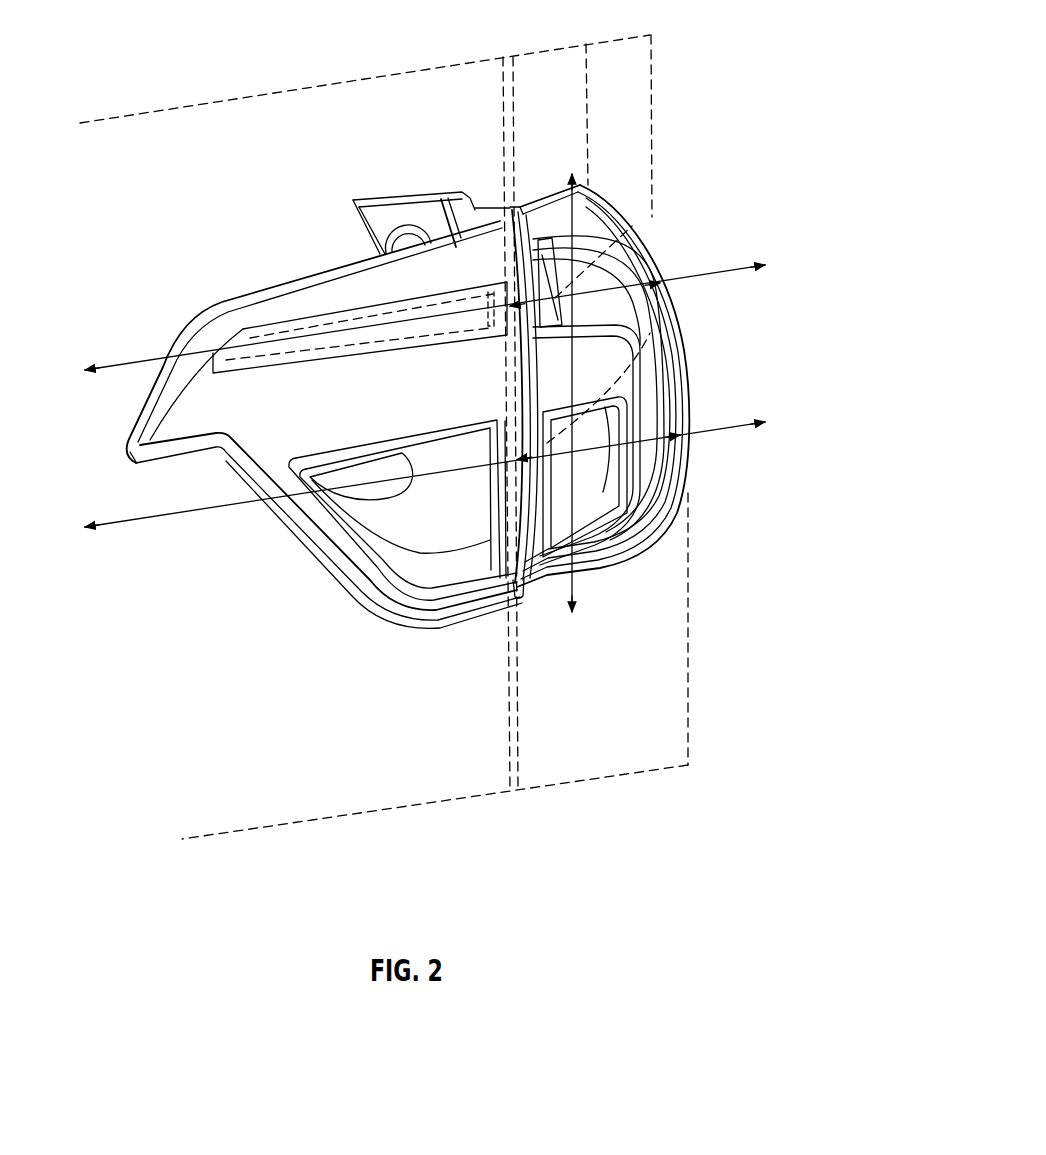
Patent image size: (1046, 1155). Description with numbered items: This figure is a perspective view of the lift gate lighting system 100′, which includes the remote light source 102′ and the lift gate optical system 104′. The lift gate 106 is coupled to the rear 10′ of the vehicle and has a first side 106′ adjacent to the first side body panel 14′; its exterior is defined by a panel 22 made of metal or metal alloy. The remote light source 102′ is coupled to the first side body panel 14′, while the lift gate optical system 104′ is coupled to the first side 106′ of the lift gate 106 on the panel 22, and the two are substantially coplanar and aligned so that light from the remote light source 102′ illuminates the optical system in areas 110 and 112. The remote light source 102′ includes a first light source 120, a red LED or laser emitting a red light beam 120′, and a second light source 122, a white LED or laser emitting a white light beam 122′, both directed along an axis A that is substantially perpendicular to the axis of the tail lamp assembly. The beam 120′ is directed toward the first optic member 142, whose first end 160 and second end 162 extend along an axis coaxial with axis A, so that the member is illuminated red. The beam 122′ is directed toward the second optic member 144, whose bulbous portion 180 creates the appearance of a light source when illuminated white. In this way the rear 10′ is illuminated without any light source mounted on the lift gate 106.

The rear of the vehicle 10′ is at (720, 579).
The first side body panel 14′ is at (655, 100).
The panel 22 is at (221, 164).
The lift gate lighting system 100′ is at (758, 369).
The remote light source 102′ is at (583, 621).
The lift gate optical system 104′ is at (387, 636).
The lift gate 106 is at (221, 848).
The first side of the lift gate 106′ is at (482, 57).
The illuminated area 110 is at (353, 483).
The illuminated area 112 is at (127, 450).
The first light source 120 is at (653, 213).
The light beam 120′ is at (510, 207).
The second light source 122 is at (672, 328).
The light beam 122′ is at (530, 437).
The first optic member 142 is at (337, 320).
The second optic member 144 is at (303, 537).
The first end 160 is at (132, 410).
The second end 162 is at (440, 233).
The bulbous portion 180 is at (317, 550).
The axis A is at (729, 265).